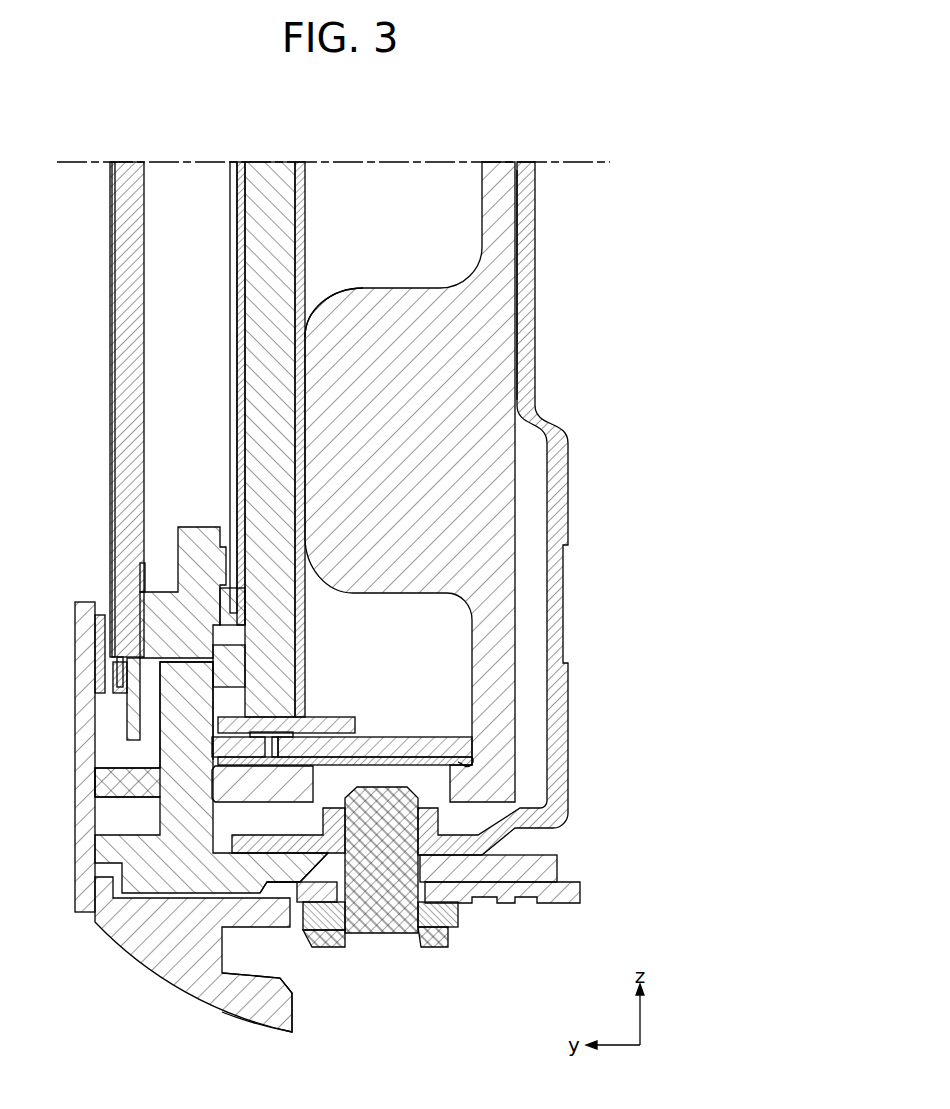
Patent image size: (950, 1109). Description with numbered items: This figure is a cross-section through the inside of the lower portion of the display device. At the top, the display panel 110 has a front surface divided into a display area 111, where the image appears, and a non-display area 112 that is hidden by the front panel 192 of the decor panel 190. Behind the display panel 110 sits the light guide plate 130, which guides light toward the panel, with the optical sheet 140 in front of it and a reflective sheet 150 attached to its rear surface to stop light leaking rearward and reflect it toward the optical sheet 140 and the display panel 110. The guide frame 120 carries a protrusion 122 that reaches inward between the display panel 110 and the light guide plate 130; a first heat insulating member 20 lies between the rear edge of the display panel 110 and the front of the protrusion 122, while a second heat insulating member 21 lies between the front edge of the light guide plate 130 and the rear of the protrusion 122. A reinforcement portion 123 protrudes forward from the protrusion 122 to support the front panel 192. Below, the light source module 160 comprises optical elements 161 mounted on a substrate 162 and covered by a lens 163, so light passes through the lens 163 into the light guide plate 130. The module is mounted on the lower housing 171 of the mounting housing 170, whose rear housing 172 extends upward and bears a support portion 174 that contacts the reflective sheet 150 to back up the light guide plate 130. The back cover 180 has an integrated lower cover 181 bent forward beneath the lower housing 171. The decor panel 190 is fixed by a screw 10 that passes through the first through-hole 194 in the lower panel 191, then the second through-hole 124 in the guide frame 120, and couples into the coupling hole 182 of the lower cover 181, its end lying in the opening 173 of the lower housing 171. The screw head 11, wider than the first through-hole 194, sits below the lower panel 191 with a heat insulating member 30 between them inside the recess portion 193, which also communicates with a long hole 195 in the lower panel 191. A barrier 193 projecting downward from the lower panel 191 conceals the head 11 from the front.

The screw 10 is at (380, 906).
The head 11 is at (435, 945).
The first heat insulating member 20 is at (146, 607).
The second heat insulating member 21 is at (223, 667).
The heat insulating member 30 is at (442, 940).
The display panel 110 is at (90, 409).
The display area 111 is at (110, 413).
The non-display area 112 is at (113, 635).
The guide frame 120 is at (182, 860).
The protrusion 122 is at (172, 727).
The reinforcement portion 123 is at (98, 780).
The second through-hole 124 is at (338, 918).
The light guide plate 130 is at (270, 160).
The optical sheet 140 is at (236, 160).
The reflective sheet 150 is at (300, 160).
The light source module 160 is at (411, 699).
The optical element 161 is at (300, 712).
The substrate 162 is at (386, 736).
The lens 163 is at (343, 715).
The mounting housing 170 is at (463, 443).
The lower housing 171 is at (460, 782).
The rear housing 172 is at (510, 228).
The opening 173 is at (437, 756).
The support portion 174 is at (377, 290).
The back cover 180 is at (431, 487).
The lower cover 181 is at (430, 893).
The coupling hole 182 is at (420, 823).
The decor panel 190 is at (154, 835).
The lower panel 191 is at (248, 918).
The front panel 192 is at (76, 834).
The barrier 193 is at (128, 943).
The first through-hole 194 is at (468, 847).
The long hole 195 is at (332, 863).